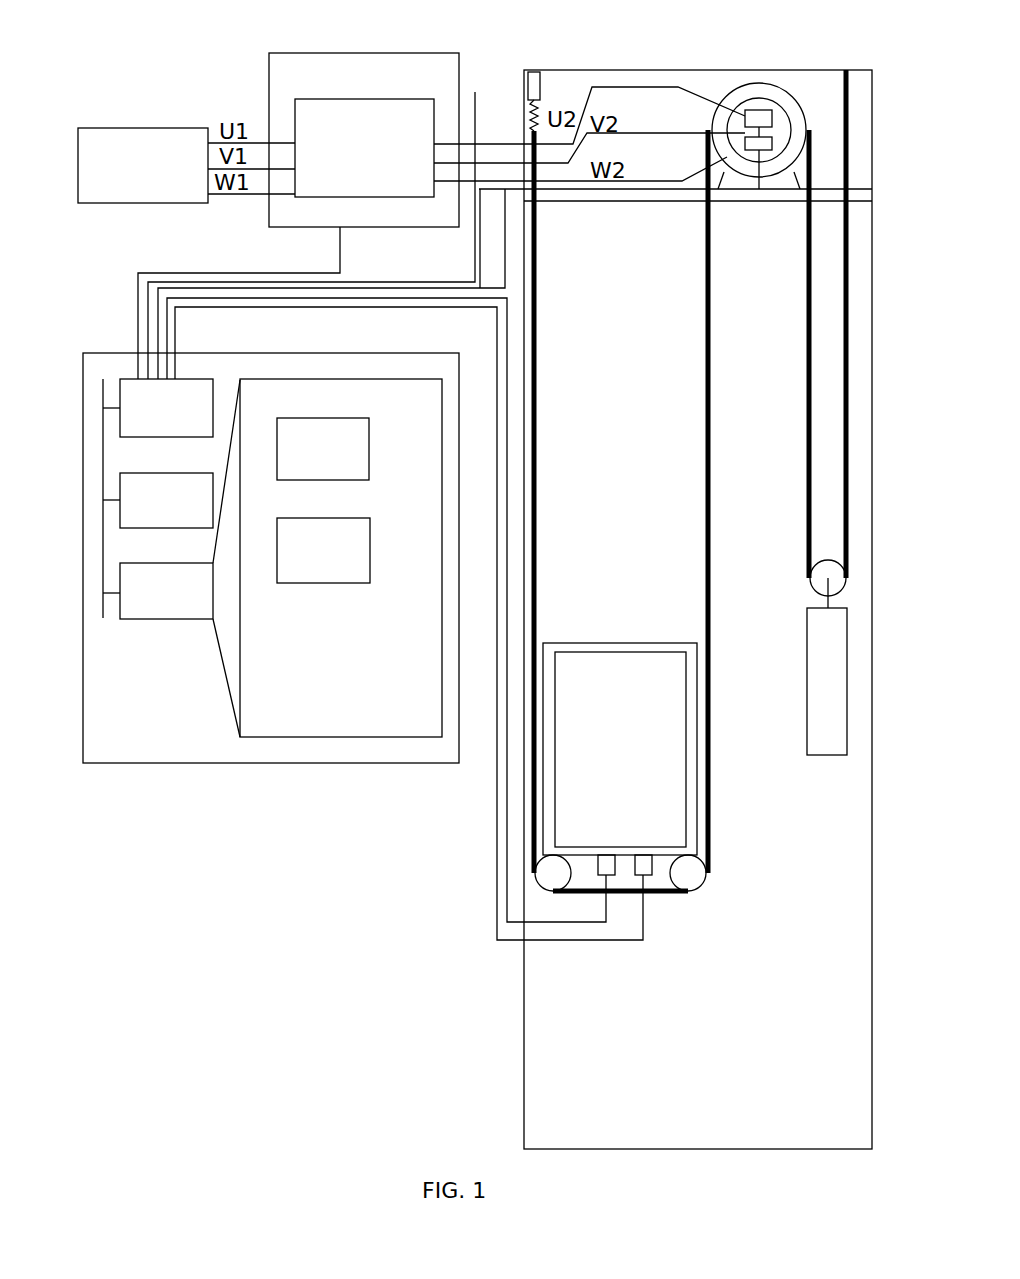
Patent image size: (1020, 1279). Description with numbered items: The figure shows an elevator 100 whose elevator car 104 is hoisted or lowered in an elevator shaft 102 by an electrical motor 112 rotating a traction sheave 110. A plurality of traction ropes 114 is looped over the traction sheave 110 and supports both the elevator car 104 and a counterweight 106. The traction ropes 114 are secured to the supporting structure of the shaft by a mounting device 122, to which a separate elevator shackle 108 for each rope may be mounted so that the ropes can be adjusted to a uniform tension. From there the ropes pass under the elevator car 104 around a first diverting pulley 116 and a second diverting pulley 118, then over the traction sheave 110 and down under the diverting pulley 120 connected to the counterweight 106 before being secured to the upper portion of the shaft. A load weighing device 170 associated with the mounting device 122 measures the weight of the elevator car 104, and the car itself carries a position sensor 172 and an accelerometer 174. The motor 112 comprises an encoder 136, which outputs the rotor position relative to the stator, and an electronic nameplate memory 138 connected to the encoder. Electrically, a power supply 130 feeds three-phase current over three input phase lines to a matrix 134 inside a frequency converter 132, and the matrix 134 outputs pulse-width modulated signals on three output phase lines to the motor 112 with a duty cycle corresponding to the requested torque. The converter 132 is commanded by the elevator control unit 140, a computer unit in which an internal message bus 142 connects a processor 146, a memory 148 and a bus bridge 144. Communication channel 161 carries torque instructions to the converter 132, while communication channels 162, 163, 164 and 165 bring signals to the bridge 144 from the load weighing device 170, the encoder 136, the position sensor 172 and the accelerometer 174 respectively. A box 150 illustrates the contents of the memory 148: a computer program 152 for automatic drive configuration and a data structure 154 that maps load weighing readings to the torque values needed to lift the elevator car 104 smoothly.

The elevator 100 is at (104, 76).
The elevator shaft 102 is at (696, 1149).
The elevator car 104 is at (642, 643).
The counterweight 106 is at (822, 755).
The elevator shackle 108 is at (530, 118).
The traction sheave 110 is at (760, 83).
The electrical motor 112 is at (764, 98).
The traction ropes 114 is at (711, 286).
The first diverting pulley 116 is at (556, 891).
The second diverting pulley 118 is at (706, 888).
The diverting pulley 120 is at (810, 576).
The mounting device 122 is at (528, 80).
The power supply 130 is at (78, 185).
The frequency converter 132 is at (362, 53).
The matrix 134 is at (404, 197).
The encoder 136 is at (722, 150).
The memory 138 is at (724, 117).
The elevator control unit 140 is at (130, 763).
The internal message bus 142 is at (103, 418).
The bus bridge 144 is at (202, 437).
The processor 146 is at (202, 528).
The memory 148 is at (202, 619).
The box 150 is at (304, 737).
The computer program 152 is at (304, 418).
The data structure 154 is at (304, 518).
The communication channel 161 is at (134, 280).
The communication channel 162 is at (146, 298).
The communication channel 163 is at (154, 322).
The communication channel 164 is at (172, 308).
The communication channel 165 is at (178, 372).
The load weighing device 170 is at (538, 72).
The position sensor 172 is at (606, 855).
The accelerometer 174 is at (648, 880).